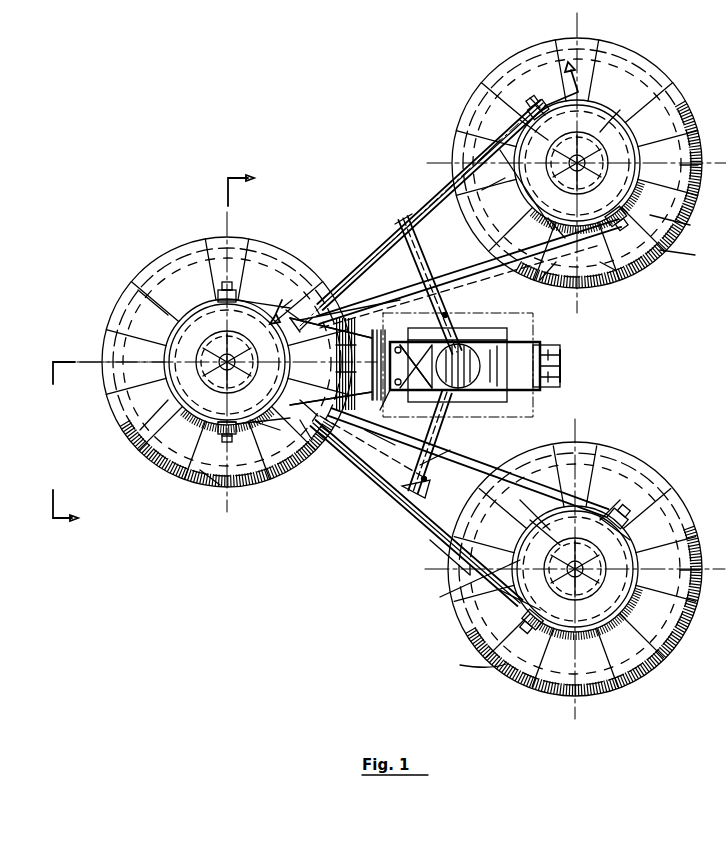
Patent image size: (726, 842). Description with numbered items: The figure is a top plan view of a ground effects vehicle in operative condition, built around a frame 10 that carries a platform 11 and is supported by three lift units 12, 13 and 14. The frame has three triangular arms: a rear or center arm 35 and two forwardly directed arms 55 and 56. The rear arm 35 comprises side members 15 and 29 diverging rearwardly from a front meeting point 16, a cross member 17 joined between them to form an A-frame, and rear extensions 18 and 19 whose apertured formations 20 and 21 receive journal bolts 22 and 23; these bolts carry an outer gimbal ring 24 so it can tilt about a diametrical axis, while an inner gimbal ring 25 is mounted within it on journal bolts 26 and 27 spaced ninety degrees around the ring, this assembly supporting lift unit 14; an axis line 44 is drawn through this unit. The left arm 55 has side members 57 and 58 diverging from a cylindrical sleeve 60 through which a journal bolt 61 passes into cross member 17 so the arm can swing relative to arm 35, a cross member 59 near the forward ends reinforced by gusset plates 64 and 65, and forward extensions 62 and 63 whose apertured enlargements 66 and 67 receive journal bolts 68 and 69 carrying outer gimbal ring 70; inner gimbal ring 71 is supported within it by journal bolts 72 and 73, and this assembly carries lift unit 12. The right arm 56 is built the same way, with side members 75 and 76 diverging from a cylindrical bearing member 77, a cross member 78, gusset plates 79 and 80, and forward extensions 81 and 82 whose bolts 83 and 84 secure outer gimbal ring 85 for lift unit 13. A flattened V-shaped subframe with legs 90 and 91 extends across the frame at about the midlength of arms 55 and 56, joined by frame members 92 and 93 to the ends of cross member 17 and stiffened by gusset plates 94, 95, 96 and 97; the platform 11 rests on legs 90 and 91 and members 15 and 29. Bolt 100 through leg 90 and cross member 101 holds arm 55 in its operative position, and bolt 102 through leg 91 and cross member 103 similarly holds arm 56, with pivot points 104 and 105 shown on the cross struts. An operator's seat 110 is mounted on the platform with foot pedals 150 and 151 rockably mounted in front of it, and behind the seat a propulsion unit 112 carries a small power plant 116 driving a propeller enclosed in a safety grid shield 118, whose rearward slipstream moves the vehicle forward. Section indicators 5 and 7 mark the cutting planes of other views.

The frame 10 is at (380, 252).
The platform 11 is at (525, 328).
The lift unit 12 is at (648, 68).
The lift unit 13 is at (645, 680).
The lift unit 14 is at (186, 252).
The side member 15 is at (346, 330).
The front meeting point 16 is at (466, 388).
The cross member 17 is at (338, 353).
The extension 18 is at (232, 292).
The extension 19 is at (228, 440).
The apertured formation 20 is at (218, 298).
The apertured formation 21 is at (222, 434).
The journal bolt 22 is at (226, 288).
The journal bolt 23 is at (212, 484).
The outer gimbal ring 24 is at (176, 316).
The inner gimbal ring 25 is at (216, 418).
The journal bolt 26 is at (180, 394).
The journal bolt 27 is at (258, 424).
The side member 29 is at (338, 375).
The rear arm 35 is at (340, 404).
The axis 44 is at (170, 358).
The forwardly directed arm 55 is at (448, 195).
The arm 56 is at (440, 548).
The side member 57 is at (440, 210).
The side member 58 is at (470, 262).
The cross member 59 is at (512, 210).
The cylindrical sleeve 60 is at (300, 268).
The journal bolt 61 is at (298, 300).
The extension 62 is at (516, 126).
The extension 63 is at (560, 240).
The gusset plate 64 is at (470, 165).
The gusset plate 65 is at (548, 282).
The apertured enlargement 66 is at (545, 104).
The apertured enlargement 67 is at (626, 248).
The journal bolt 68 is at (530, 110).
The journal bolt 69 is at (620, 270).
The outer gimbal ring 70 is at (598, 122).
The inner gimbal ring 71 is at (628, 205).
The journal bolt 72 is at (510, 196).
The journal bolt 73 is at (640, 160).
The side member 75 is at (474, 465).
The side member 76 is at (432, 534).
The cylindrical bearing member 77 is at (292, 466).
The cross member 78 is at (510, 535).
The gusset plate 79 is at (536, 470).
The gusset plate 80 is at (452, 594).
The forward extension 81 is at (596, 470).
The forward extension 82 is at (520, 606).
The bolt 83 is at (625, 510).
The bolt 84 is at (500, 660).
The outer gimbal ring 85 is at (632, 570).
The subframe leg 90 is at (405, 262).
The subframe leg 91 is at (412, 460).
The frame member 92 is at (330, 258).
The frame member 93 is at (356, 474).
The gusset plate 94 is at (394, 230).
The gusset plate 95 is at (404, 504).
The gusset plate 96 is at (320, 448).
The gusset plate 97 is at (312, 290).
The bolt 100 is at (420, 240).
The cross member 101 is at (438, 256).
The bolt 102 is at (426, 486).
The cross member 103 is at (436, 460).
The pivot 104 is at (448, 314).
The cross strut 105 is at (452, 420).
The operator's seat 110 is at (496, 386).
The vehicle propulsion unit 112 is at (402, 332).
The power plant 116 is at (390, 396).
The safety grid shield 118 is at (378, 436).
The foot pedal 150 is at (560, 382).
The foot pedal 151 is at (552, 350).
The section line 5 is at (425, 193).
The section line 7 is at (162, 353).